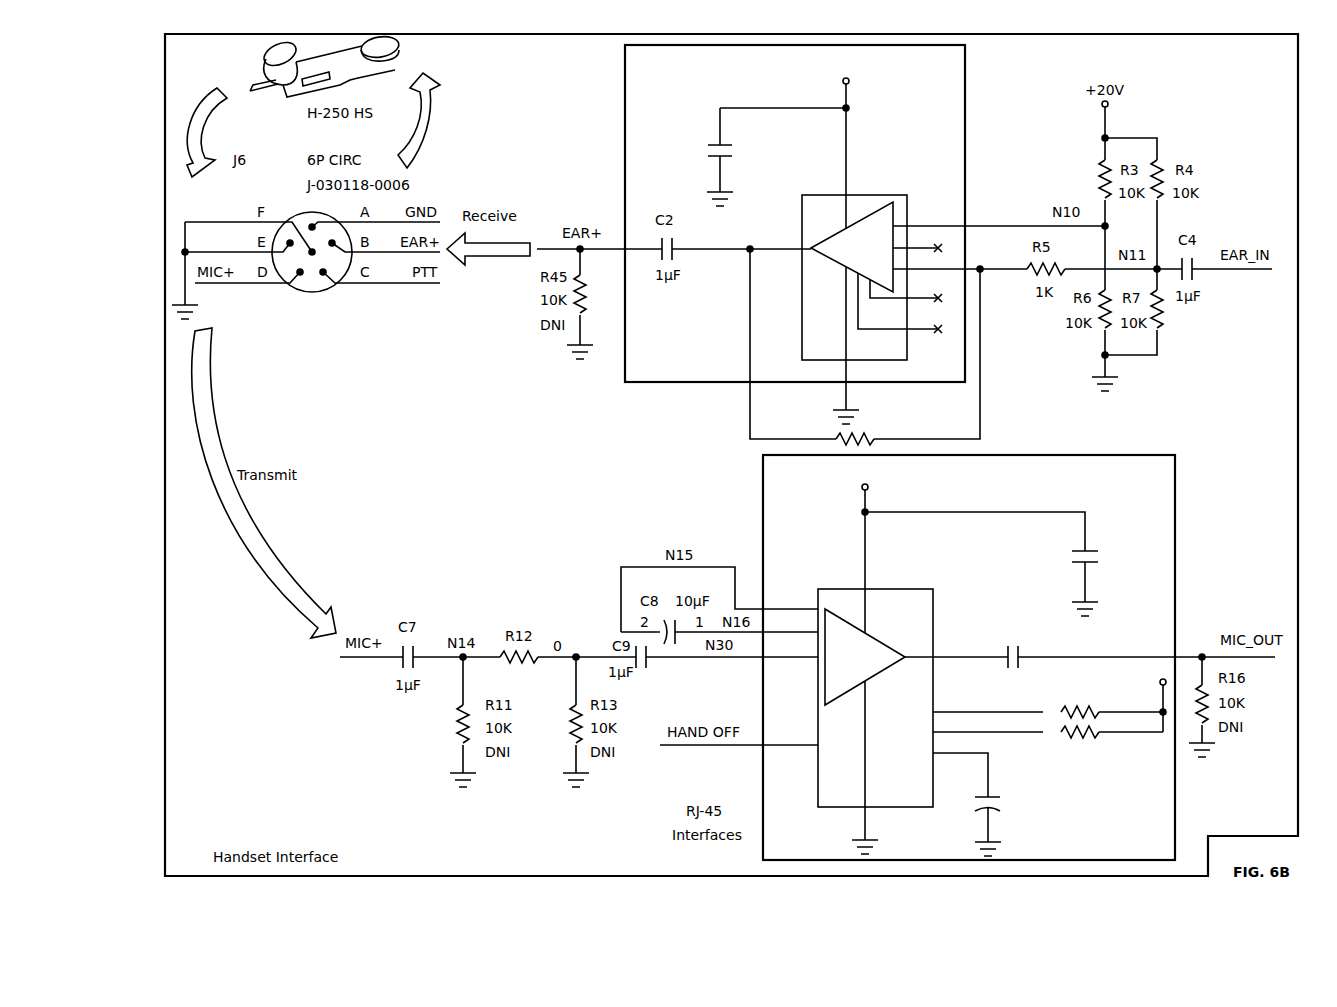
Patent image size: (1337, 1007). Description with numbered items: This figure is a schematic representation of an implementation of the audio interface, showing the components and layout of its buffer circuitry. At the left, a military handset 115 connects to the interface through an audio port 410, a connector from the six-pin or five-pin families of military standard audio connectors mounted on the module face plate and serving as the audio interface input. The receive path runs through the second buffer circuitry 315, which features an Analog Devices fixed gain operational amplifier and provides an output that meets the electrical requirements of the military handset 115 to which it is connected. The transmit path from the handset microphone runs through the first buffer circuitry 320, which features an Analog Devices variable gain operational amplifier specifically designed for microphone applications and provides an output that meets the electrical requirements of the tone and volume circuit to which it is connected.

The military handset 115 is at (260, 77).
The audio port 410 is at (318, 290).
The second buffer circuitry 315 is at (965, 95).
The first buffer circuitry 320 is at (1175, 545).